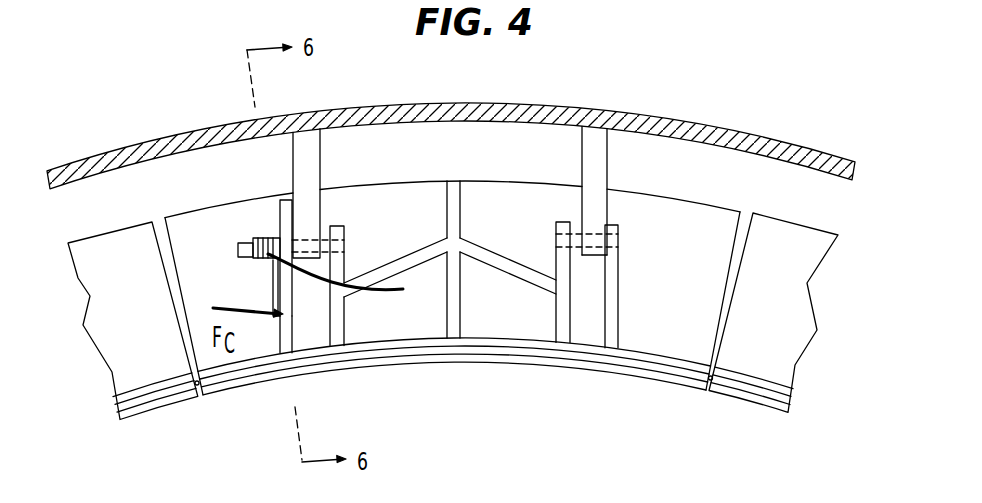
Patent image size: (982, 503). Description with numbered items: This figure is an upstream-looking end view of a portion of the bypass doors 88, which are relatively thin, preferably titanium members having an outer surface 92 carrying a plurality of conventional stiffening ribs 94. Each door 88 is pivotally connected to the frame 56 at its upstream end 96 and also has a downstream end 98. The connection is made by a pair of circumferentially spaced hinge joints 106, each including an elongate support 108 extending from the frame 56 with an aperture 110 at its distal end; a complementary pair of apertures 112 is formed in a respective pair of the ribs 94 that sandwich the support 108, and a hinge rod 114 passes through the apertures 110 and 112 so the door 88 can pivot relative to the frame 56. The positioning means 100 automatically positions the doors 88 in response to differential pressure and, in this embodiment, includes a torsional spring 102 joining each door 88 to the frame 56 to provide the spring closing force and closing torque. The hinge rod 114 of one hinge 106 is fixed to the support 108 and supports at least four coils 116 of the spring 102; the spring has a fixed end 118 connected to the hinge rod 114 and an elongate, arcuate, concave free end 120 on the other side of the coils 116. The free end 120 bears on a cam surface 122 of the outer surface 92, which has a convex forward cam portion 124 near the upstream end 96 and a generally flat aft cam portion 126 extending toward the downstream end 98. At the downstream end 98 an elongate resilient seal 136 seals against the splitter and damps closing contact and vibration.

The frame 56 is at (545, 105).
The door 88 is at (107, 233).
The outer surface 92 is at (484, 191).
The stiffening ribs 94 is at (425, 242).
The upstream end 96 is at (361, 192).
The downstream end 98 is at (490, 317).
The positioning means 100 is at (266, 226).
The torsional spring 102 is at (353, 279).
The hinge joints 106 is at (393, 224).
The elongate support 108 is at (321, 158).
The aperture 110 is at (600, 250).
The apertures 112 is at (619, 245).
The hinge rod 114 is at (239, 244).
The coils 116 is at (252, 236).
The fixed end 118 is at (240, 256).
The free end 120 is at (283, 298).
The cam surface 122 is at (277, 341).
The forward cam portion 124 is at (272, 290).
The aft cam portion 126 is at (293, 338).
The resilient seal 136 is at (621, 362).